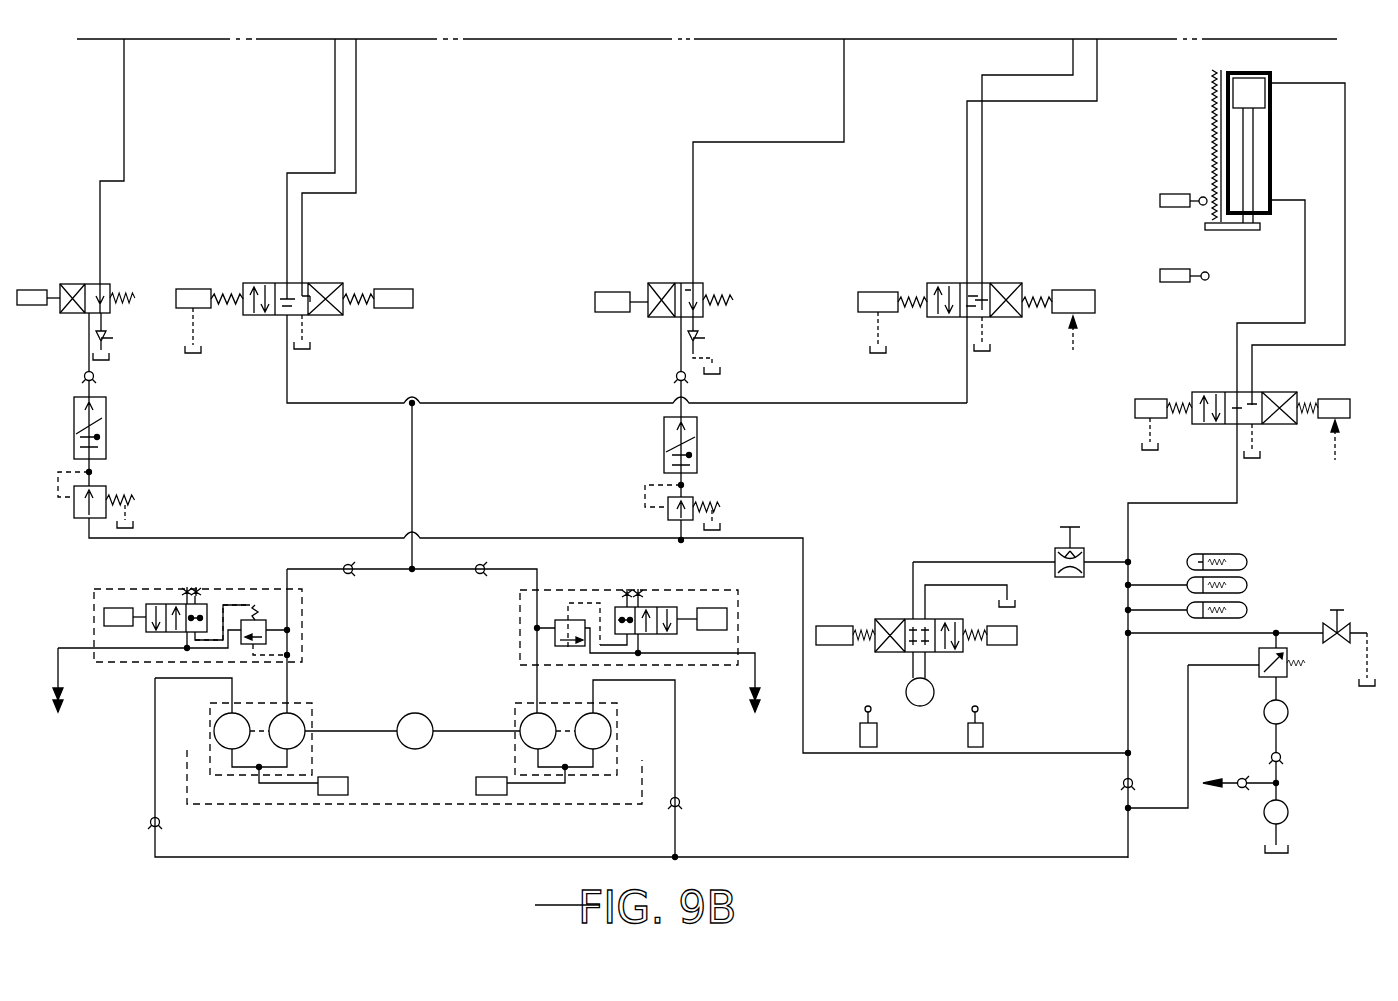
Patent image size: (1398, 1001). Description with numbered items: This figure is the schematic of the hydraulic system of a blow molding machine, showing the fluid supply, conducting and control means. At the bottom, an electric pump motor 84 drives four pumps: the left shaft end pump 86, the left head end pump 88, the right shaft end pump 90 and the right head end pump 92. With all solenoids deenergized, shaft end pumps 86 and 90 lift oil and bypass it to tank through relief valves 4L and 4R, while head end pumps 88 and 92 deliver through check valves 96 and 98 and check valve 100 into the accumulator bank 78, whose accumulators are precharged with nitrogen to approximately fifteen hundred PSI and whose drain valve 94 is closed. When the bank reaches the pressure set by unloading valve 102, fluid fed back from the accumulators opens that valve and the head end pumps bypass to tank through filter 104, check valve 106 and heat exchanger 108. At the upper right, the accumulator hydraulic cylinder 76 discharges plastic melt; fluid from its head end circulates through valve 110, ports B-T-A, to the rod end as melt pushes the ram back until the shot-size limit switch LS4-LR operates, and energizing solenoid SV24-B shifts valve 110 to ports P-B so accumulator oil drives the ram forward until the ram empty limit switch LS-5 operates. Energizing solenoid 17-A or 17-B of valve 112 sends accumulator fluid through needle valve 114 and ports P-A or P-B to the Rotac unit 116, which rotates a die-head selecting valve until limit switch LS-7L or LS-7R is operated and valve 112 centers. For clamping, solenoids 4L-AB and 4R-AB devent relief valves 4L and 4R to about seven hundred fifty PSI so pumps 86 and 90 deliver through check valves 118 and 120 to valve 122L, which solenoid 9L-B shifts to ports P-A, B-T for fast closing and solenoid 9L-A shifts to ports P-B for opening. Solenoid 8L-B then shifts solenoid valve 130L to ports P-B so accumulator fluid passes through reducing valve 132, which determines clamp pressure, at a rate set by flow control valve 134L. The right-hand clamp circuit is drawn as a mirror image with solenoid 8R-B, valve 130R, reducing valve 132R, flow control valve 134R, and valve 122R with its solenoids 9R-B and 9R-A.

The solenoid 8L-B is at (32, 290).
The solenoid 9L-B is at (193, 289).
The solenoid 9L-A is at (395, 289).
The solenoid valve 130L is at (62, 320).
The valve 122L is at (258, 322).
The flow control valve 134L is at (112, 430).
The reducing valve 132 is at (113, 490).
The solenoid 4L-AB is at (208, 630).
The relief valve 4L is at (304, 628).
The check valve 118 is at (352, 576).
The check valve 120 is at (478, 576).
The left head end pump 88 is at (214, 728).
The left shaft end pump 86 is at (302, 722).
The electric pump motor 84 is at (425, 713).
The right shaft end pump 90 is at (530, 718).
The right head end pump 92 is at (608, 723).
The check valve 96 is at (150, 826).
The check valve 98 is at (680, 803).
The solenoid 8R-B is at (612, 292).
The right solenoid operated valve 130R is at (650, 322).
The right flow control valve 134R is at (703, 440).
The right pressure reducing valve 132R is at (702, 500).
The solenoid 9R-B is at (880, 292).
The solenoid 9R-A is at (1070, 290).
The right directional control valve 122R is at (1025, 245).
The solenoid 4R-AB is at (631, 634).
The relief valve 4R is at (520, 622).
The valve 112 is at (876, 592).
The solenoid 17-A is at (832, 626).
The solenoid 17-B is at (1010, 626).
The Rotac unit 116 is at (935, 690).
The limit switch LS-7L is at (878, 738).
The limit switch LS-7R is at (985, 738).
The needle valve 114 is at (1070, 526).
The accumulator hydraulic cylinder 76 is at (1272, 154).
The shot-size limit switch LS4-LR is at (1160, 202).
The ram empty limit switch LS-5 is at (1175, 283).
The valve 110 is at (1285, 385).
The solenoid SV24-B is at (1330, 424).
The accumulator bank 78 is at (1250, 610).
The accumulator drain valve 94 is at (1340, 612).
The unloading valve 102 is at (1290, 670).
The filter 104 is at (1290, 718).
The check valve 106 is at (1284, 760).
The heat exchanger 108 is at (1290, 812).
The check valve 100 is at (1122, 786).